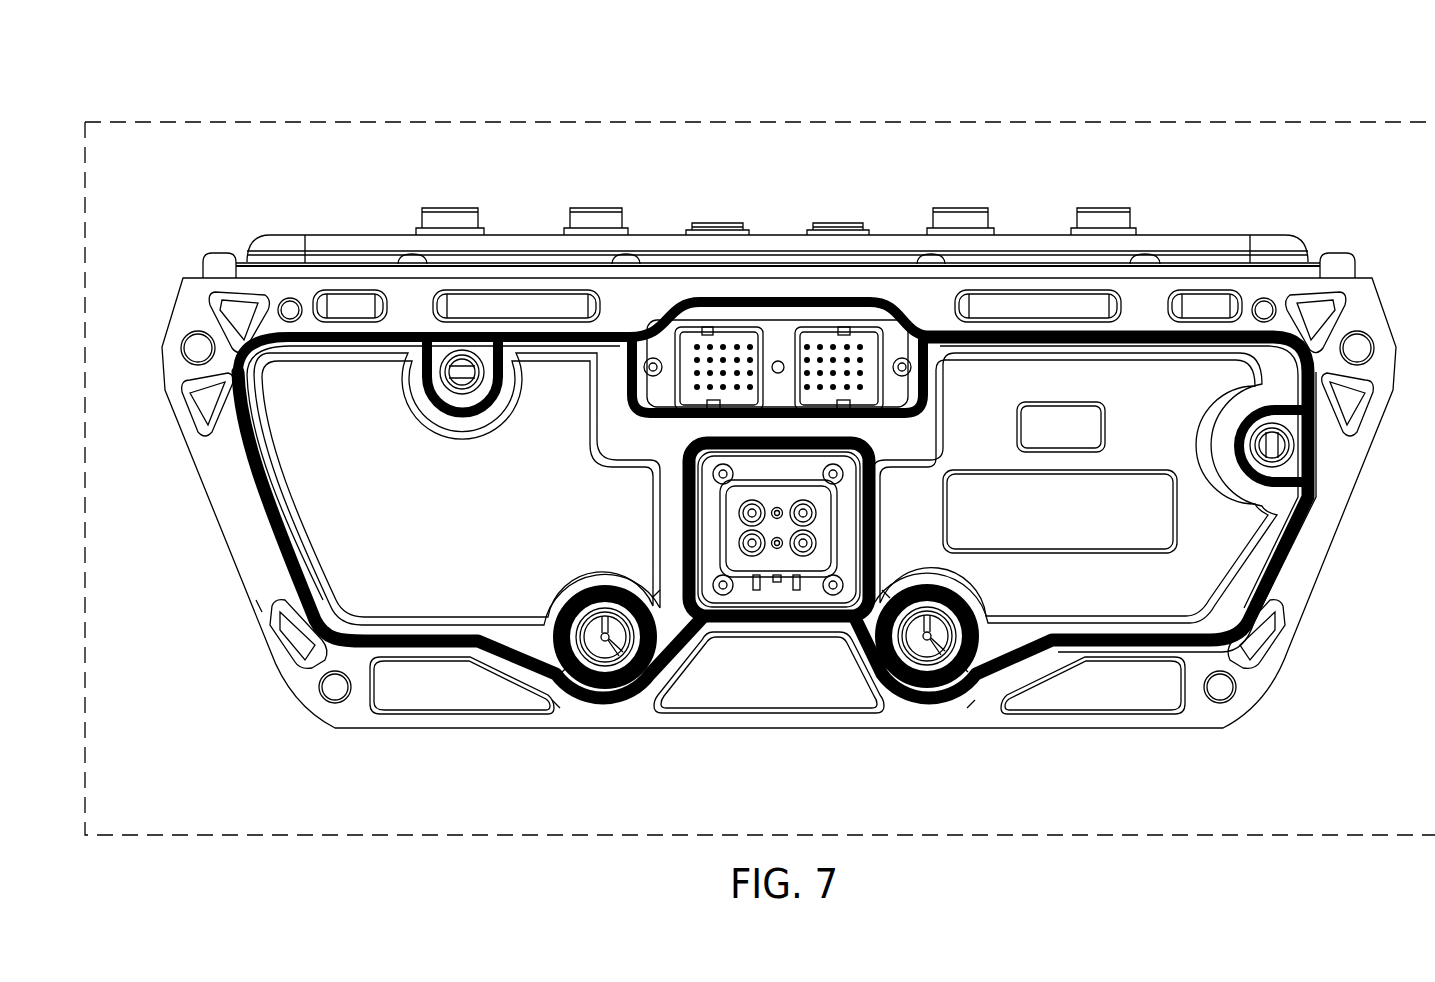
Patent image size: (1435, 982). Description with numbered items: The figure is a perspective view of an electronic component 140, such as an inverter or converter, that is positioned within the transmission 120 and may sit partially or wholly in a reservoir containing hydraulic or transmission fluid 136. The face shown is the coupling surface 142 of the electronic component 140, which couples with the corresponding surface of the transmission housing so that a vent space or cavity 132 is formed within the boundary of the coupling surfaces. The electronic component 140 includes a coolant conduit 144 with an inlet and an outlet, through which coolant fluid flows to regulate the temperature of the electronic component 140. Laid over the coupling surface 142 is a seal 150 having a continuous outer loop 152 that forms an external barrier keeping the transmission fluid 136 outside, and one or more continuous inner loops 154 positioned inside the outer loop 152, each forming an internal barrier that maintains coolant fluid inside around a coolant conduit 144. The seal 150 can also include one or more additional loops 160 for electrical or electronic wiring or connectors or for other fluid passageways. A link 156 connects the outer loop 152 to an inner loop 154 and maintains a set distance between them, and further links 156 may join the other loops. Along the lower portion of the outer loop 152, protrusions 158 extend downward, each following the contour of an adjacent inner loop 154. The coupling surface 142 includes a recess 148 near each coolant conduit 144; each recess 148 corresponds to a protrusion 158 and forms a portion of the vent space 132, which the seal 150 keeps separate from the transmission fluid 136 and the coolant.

The transmission 120 is at (418, 122).
The vent space or cavity 132 is at (330, 505).
The hydraulic or transmission fluid 136 is at (902, 168).
The electronic component 140 is at (330, 193).
The coupling surface 142 is at (1143, 308).
The coolant conduit 144 is at (605, 645).
The recess 148 is at (540, 626).
The seal 150 is at (645, 308).
The outer loop 152 is at (267, 567).
The inner loop 154 is at (578, 600).
The link 156 is at (655, 592).
The protrusion 158 is at (540, 690).
The additional loop 160 is at (870, 442).